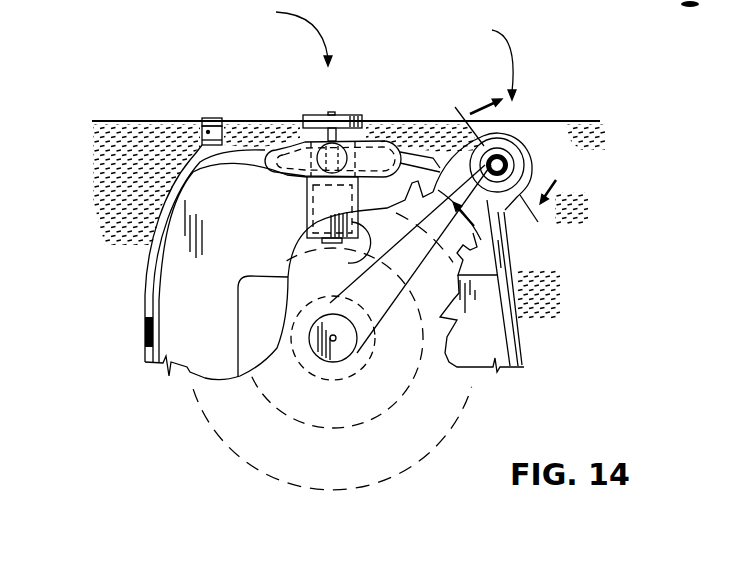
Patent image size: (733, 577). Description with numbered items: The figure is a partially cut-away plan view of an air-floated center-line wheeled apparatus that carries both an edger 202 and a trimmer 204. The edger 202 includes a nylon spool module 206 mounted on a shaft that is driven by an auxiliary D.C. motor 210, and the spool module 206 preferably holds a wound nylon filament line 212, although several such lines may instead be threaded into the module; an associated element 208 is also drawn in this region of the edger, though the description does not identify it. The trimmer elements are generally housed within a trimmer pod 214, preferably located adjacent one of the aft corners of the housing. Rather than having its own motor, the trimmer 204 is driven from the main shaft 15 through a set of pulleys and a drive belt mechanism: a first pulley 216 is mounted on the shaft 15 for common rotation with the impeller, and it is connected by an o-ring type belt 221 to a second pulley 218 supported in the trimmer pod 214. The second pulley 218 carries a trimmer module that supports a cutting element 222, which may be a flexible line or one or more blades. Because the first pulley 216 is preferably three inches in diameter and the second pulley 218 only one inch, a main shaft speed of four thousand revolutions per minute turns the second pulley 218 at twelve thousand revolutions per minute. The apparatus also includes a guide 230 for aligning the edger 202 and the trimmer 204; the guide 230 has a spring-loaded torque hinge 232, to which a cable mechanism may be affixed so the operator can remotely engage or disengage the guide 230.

The main shaft 15 is at (336, 339).
The edger 202 is at (280, 33).
The trimmer 204 is at (477, 129).
The nylon spool module 206 is at (343, 115).
The ball joint housing 208 is at (273, 123).
The auxiliary D.C. motor 210 is at (350, 263).
The wound nylon filament line 212 is at (402, 122).
The trimmer pod 214 is at (529, 164).
The first pulley 216 is at (316, 354).
The second pulley 218 is at (518, 152).
The o-ring type belt 221 is at (373, 320).
The cutting element 222 is at (533, 214).
The guide 230 is at (204, 124).
The spring-loaded torque hinge 232 is at (207, 118).